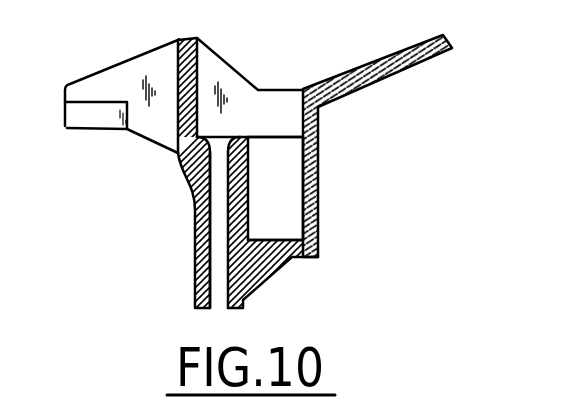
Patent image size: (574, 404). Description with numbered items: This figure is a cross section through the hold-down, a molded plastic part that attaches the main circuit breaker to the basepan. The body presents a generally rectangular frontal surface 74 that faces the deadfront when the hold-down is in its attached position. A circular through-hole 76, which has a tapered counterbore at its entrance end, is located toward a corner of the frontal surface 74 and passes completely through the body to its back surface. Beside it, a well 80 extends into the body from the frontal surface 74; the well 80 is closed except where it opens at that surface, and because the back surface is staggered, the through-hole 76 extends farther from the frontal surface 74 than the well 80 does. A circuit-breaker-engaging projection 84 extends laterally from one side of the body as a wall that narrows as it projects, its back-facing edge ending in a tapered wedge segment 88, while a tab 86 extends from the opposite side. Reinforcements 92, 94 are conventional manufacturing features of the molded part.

The frontal surface 74 is at (273, 137).
The circular through-hole 76 is at (222, 262).
The well 80 is at (287, 207).
The circuit-breaker-engaging projection 84 is at (128, 63).
The tab 86 is at (374, 82).
The tapered wedge segment 88 is at (93, 130).
The reinforcement 92 is at (255, 277).
The reinforcement 94 is at (183, 177).